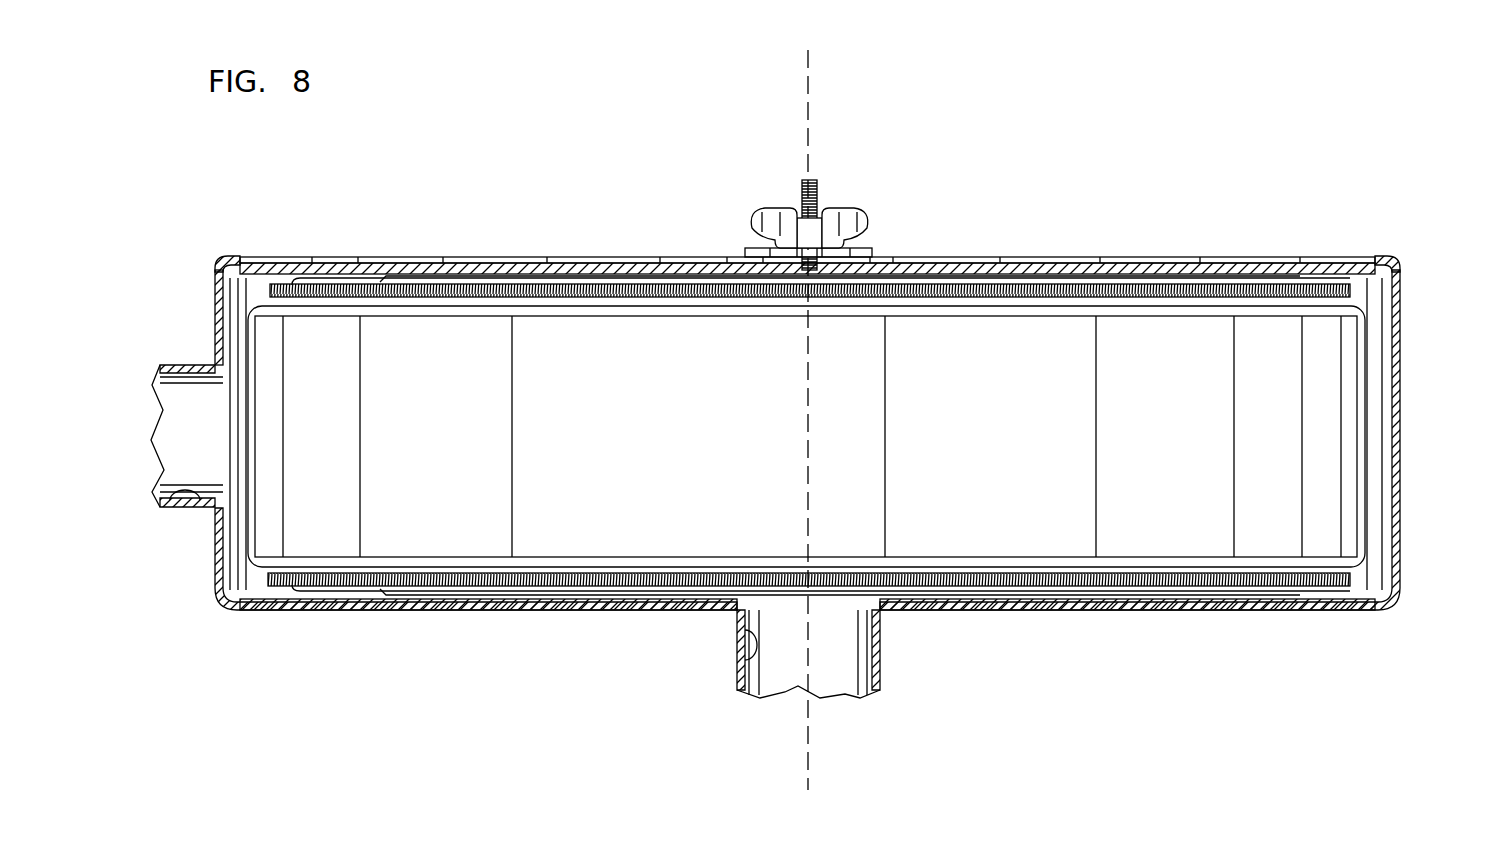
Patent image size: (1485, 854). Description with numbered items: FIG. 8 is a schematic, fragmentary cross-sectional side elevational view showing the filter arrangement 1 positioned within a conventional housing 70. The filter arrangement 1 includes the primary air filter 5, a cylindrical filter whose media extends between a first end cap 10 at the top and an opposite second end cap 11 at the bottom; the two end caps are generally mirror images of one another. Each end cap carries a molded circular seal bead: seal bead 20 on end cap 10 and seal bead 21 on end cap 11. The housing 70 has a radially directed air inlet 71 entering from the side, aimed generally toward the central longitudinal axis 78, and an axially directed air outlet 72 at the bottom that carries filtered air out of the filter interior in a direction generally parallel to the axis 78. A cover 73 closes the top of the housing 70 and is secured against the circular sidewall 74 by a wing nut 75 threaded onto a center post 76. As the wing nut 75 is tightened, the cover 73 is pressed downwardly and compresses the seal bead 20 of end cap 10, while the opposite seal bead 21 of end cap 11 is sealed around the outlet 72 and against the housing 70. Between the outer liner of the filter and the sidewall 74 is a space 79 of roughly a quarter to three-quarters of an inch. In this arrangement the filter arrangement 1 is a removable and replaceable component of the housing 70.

The filter arrangement 1 is at (1030, 462).
The primary air filter 5 is at (1128, 513).
The end cap 10 is at (327, 280).
The end cap 11 is at (311, 590).
The seal bead 20 is at (405, 276).
The seal bead 21 is at (417, 597).
The housing 70 is at (522, 270).
The air inlet 71 is at (173, 498).
The air outlet 72 is at (745, 650).
The cover 73 is at (1020, 268).
The sidewall 74 is at (1400, 380).
The wing nut 75 is at (857, 224).
The center post 76 is at (814, 184).
The central longitudinal axis 78 is at (808, 770).
The space 79 is at (213, 330).